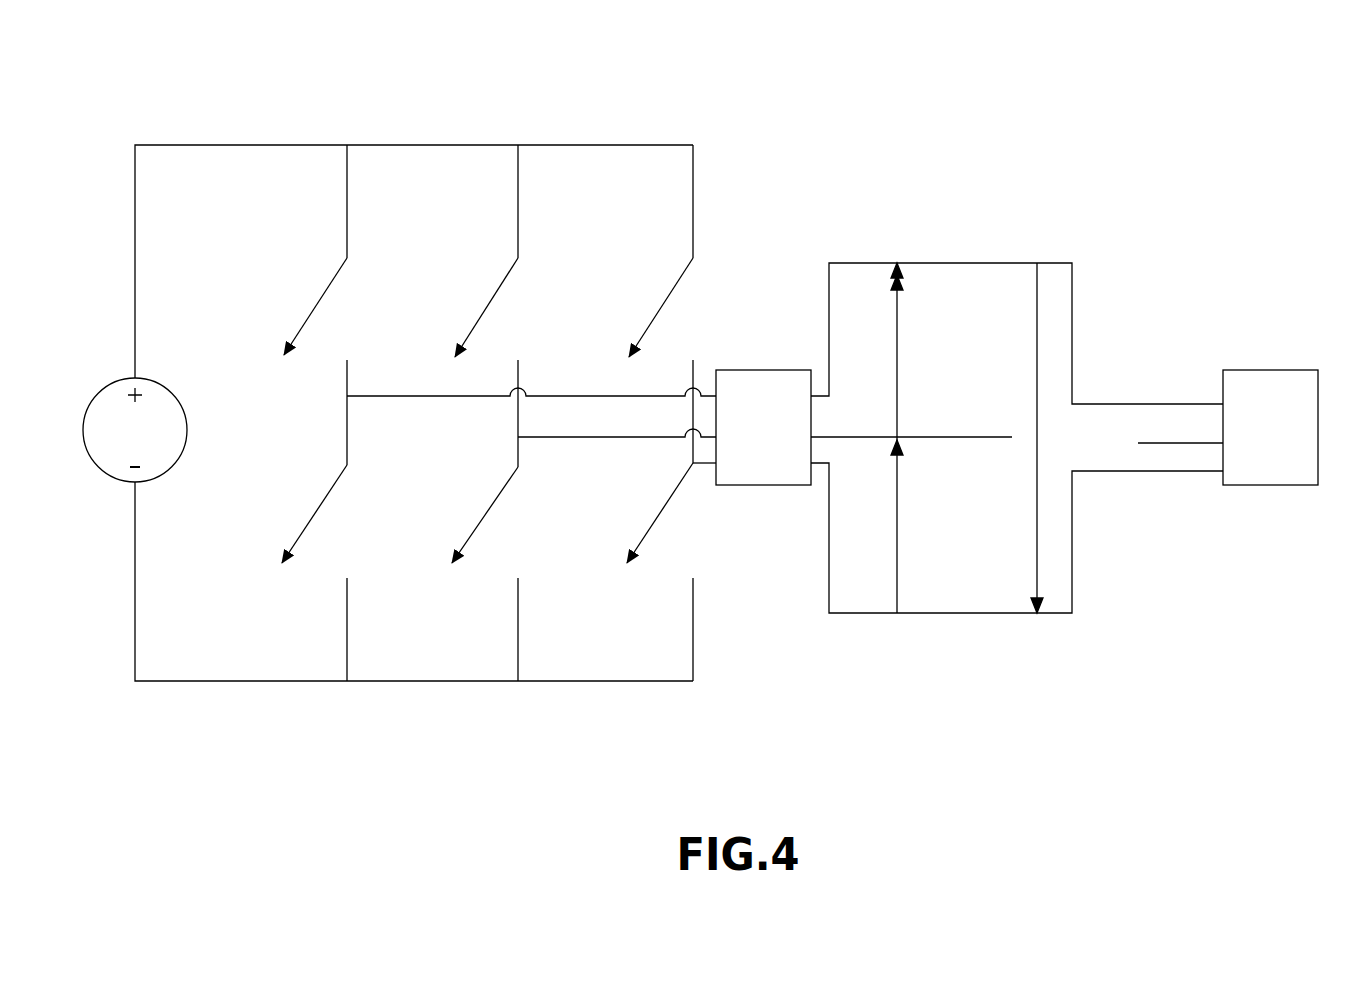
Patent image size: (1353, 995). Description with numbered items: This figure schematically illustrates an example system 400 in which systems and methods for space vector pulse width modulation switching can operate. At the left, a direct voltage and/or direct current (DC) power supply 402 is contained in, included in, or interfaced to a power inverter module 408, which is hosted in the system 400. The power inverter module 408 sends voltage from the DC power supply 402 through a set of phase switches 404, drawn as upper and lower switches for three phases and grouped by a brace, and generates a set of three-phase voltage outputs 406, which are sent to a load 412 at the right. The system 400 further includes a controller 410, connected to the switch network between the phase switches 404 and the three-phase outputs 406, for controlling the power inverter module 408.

The system 400 is at (792, 106).
The DC power supply 402 is at (187, 433).
The set of phase switches 404 is at (318, 297).
The set of three-phase voltage outputs 406 is at (1090, 272).
The power inverter module 408 is at (452, 465).
The controller 410 is at (775, 370).
The load 412 is at (1286, 371).